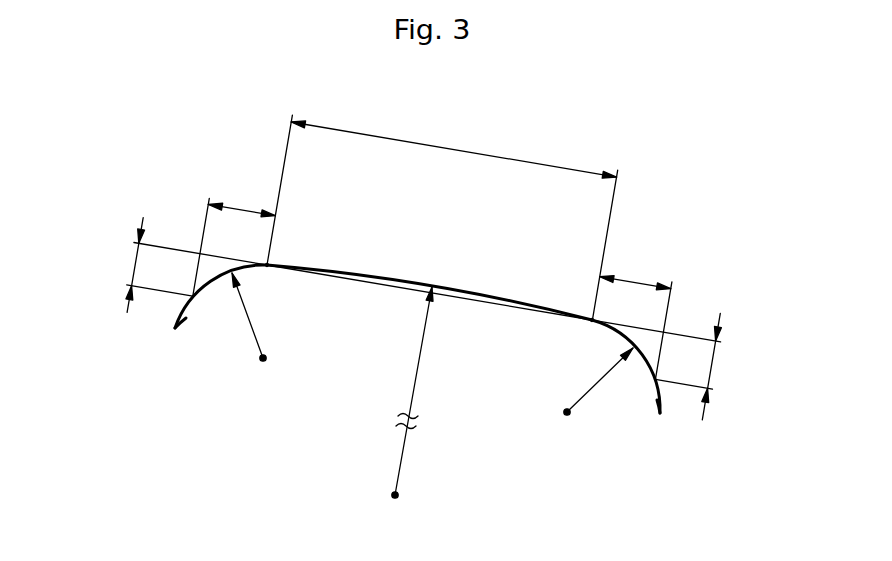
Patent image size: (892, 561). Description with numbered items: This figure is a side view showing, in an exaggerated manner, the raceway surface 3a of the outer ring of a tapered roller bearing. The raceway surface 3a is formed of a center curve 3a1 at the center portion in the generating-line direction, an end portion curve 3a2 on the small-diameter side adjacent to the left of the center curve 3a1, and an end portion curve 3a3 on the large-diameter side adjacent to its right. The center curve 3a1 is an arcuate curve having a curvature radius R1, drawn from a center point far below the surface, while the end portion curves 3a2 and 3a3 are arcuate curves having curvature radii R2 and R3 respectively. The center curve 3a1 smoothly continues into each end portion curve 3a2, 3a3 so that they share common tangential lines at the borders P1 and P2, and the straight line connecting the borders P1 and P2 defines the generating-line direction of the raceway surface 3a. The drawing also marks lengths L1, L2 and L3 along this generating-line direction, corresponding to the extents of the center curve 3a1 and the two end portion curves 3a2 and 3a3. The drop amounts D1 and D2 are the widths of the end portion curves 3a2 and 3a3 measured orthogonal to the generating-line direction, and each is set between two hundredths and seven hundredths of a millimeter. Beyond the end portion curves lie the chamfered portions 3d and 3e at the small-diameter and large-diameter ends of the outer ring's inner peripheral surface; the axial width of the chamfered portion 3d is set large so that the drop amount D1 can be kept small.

The raceway surface 3a is at (398, 278).
The center curve 3a1 is at (485, 300).
The end portion curve 3a2 is at (218, 272).
The end portion curve 3a3 is at (632, 343).
The chamfered portion 3d is at (182, 313).
The chamfered portion 3e is at (663, 400).
The border P1 is at (268, 264).
The border P2 is at (592, 320).
The length of arc-shaped portion L1 is at (453, 155).
The length of left curved portion L2 is at (242, 210).
The length of right curved portion L3 is at (637, 282).
The drop amount D1 is at (136, 262).
The drop amount D2 is at (712, 368).
The curvature radius R1 is at (420, 358).
The curvature radius R2 is at (248, 315).
The curvature radius R3 is at (595, 385).